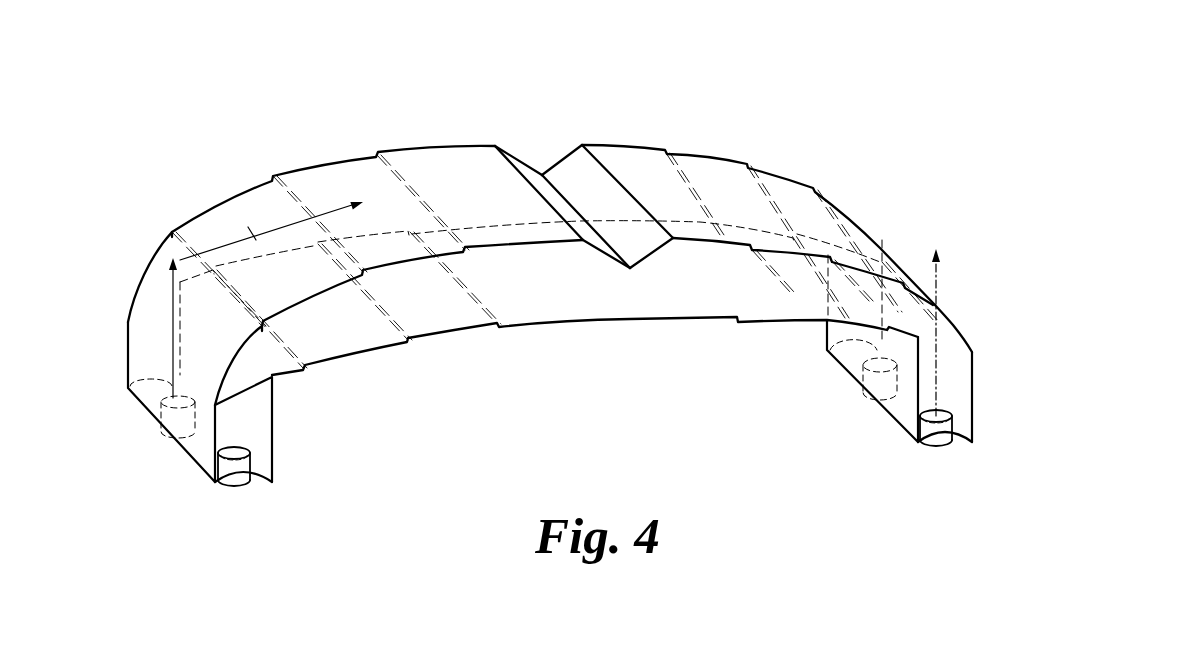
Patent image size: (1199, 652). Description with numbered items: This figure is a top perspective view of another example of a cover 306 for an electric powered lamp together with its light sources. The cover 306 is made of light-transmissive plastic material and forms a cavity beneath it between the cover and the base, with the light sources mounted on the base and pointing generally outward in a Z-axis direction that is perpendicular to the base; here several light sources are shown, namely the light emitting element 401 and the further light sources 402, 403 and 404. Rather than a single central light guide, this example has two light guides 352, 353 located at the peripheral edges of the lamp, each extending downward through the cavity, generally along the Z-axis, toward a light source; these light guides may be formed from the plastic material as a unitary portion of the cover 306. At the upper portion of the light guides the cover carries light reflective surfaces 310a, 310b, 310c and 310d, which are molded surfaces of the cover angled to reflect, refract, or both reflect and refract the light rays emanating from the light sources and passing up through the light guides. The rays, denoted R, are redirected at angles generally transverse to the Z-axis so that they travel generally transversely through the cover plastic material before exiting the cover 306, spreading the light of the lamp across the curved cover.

The cover 306 is at (789, 120).
The light reflective surface 310a is at (568, 170).
The light reflective surface 310b is at (533, 178).
The light reflective surface 310c is at (157, 293).
The light reflective surface 310d is at (953, 328).
The light guide 352 is at (255, 418).
The light guide 353 is at (955, 380).
The light emitting element 401 is at (940, 443).
The light source 402 is at (240, 479).
The light source 403 is at (877, 382).
The light source 404 is at (177, 423).